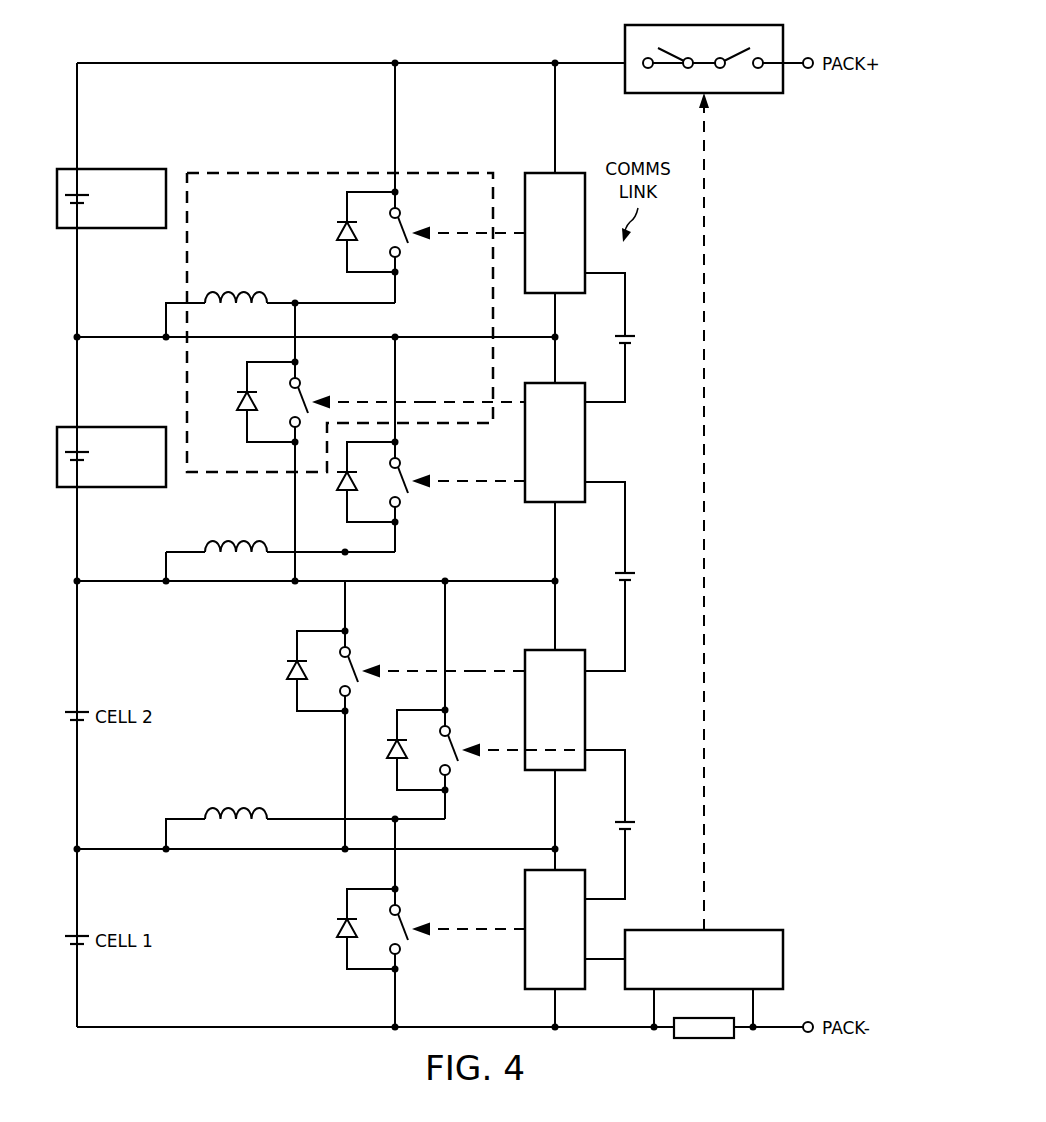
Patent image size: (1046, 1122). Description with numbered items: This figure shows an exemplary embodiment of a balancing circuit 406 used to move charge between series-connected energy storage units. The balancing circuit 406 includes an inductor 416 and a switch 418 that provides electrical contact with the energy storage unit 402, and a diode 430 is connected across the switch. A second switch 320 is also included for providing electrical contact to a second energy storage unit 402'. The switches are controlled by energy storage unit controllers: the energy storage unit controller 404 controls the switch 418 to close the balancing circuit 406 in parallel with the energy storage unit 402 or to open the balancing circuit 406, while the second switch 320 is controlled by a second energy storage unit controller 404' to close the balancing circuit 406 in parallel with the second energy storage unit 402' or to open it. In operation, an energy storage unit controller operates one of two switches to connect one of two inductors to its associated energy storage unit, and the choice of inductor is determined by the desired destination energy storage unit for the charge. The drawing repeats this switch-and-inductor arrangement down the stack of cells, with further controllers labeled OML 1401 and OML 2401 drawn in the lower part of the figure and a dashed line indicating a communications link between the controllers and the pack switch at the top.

The energy storage unit 402 is at (111, 174).
The second energy storage unit 402' is at (111, 432).
The balancing circuit 406 is at (278, 171).
The inductor 416 is at (228, 288).
The switch 418 is at (408, 226).
The diode 430 is at (338, 229).
The switch 320 is at (308, 391).
The energy storage unit controller 404 is at (555, 233).
The second energy storage unit controller 404' is at (555, 442).
The OML controller 1401 is at (555, 929).
The OML controller 2401 is at (704, 565).